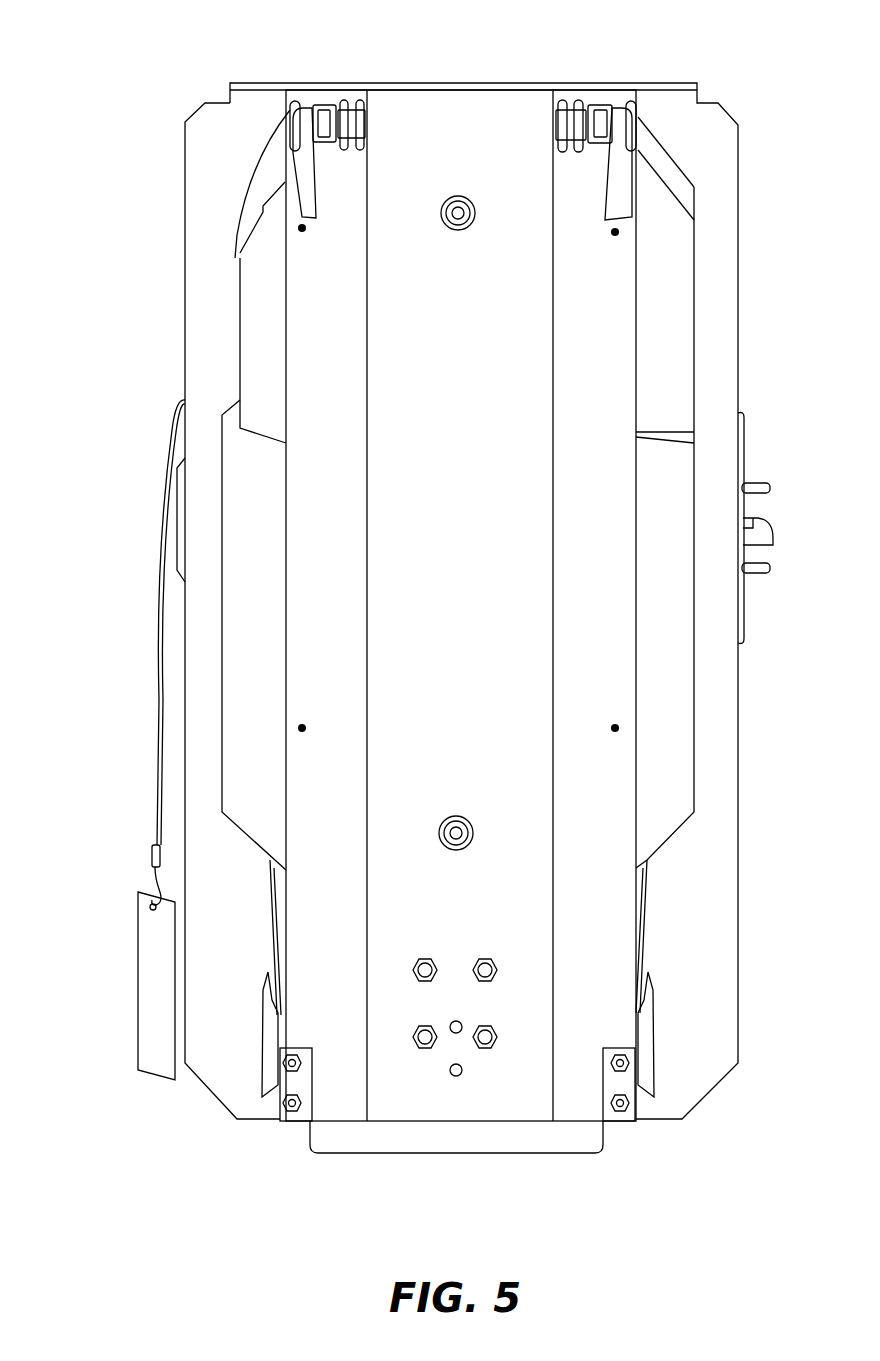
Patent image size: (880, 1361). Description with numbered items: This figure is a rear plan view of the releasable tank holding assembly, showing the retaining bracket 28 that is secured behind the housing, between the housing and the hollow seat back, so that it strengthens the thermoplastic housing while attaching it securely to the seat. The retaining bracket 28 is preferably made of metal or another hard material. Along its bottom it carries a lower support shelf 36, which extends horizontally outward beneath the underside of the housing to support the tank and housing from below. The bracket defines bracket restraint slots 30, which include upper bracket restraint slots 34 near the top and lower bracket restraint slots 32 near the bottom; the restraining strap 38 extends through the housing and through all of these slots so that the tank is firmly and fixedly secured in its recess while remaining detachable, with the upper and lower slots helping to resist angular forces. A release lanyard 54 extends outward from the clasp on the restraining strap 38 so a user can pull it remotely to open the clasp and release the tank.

The retaining bracket 28 is at (449, 533).
The bracket restraint slots 30 is at (343, 101).
The lower bracket restraint slots 32 is at (268, 860).
The upper bracket restraint slots 34 is at (357, 102).
The lower support shelf 36 is at (527, 1140).
The restraining strap 38 is at (640, 220).
The release lanyard 54 is at (157, 748).